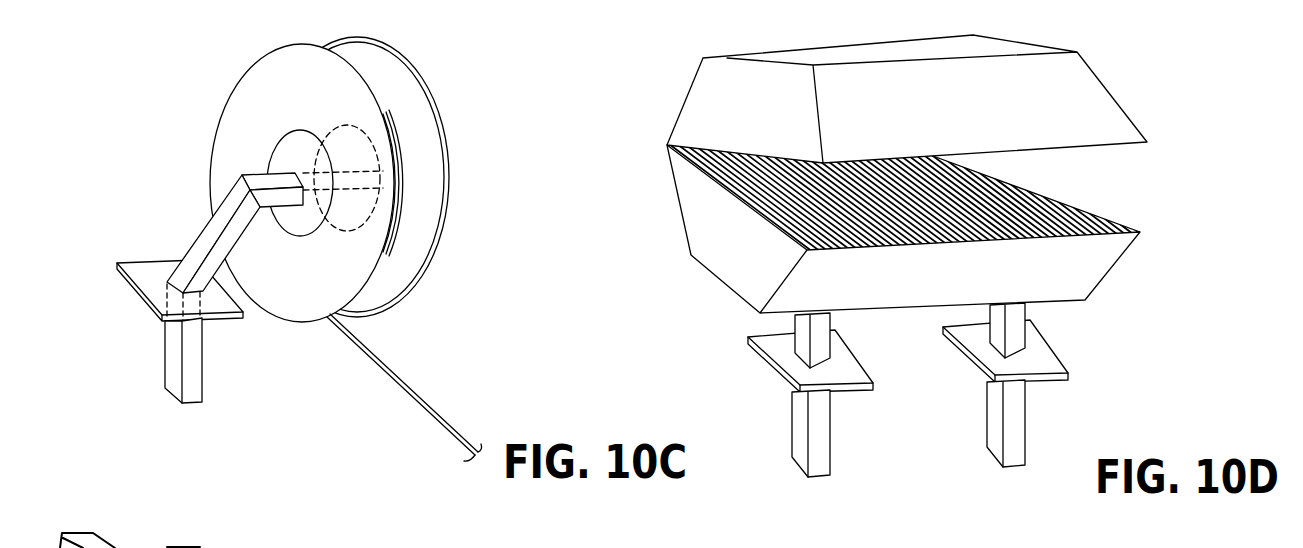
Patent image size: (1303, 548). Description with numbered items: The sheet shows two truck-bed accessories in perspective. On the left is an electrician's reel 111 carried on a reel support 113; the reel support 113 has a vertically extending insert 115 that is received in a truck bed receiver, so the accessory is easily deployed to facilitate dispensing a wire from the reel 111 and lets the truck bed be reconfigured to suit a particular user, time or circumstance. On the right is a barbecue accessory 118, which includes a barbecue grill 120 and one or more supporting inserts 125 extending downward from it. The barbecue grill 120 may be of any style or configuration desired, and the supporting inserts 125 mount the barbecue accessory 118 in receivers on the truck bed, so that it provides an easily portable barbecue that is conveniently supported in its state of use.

In FIG. 10C, the electrician's reel 111 is at (295, 105).
In FIG. 10C, the reel support 113 is at (200, 243).
In FIG. 10C, the vertically extending insert 115 is at (193, 373).
In FIG. 10D, the barbecue accessory 118 is at (641, 116).
In FIG. 10D, the barbecue grill 120 is at (1053, 108).
In FIG. 10D, the supporting inserts 125 is at (825, 423).